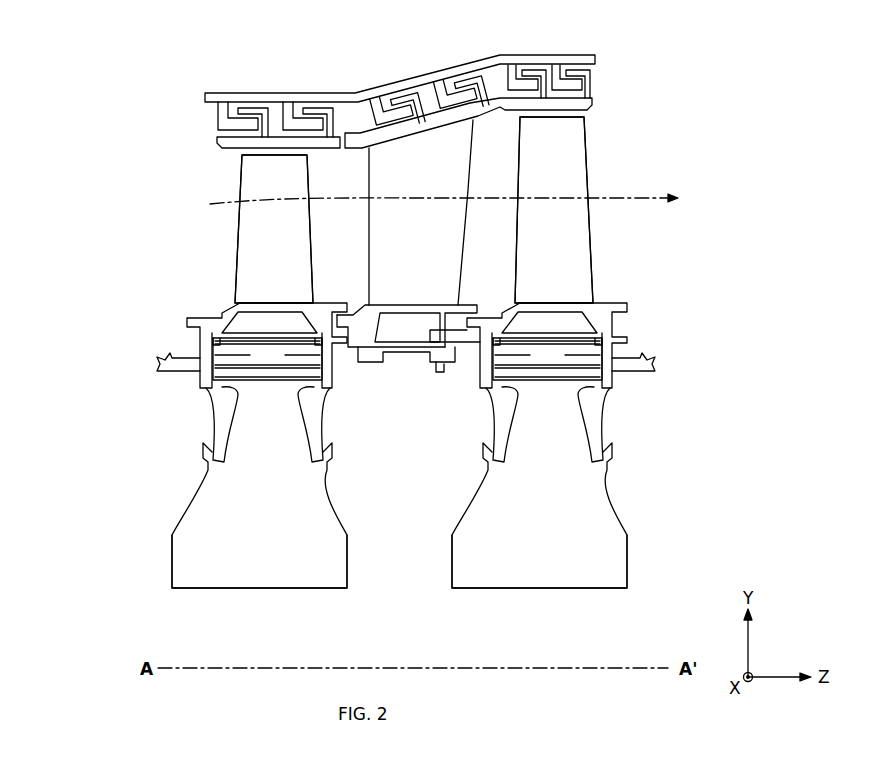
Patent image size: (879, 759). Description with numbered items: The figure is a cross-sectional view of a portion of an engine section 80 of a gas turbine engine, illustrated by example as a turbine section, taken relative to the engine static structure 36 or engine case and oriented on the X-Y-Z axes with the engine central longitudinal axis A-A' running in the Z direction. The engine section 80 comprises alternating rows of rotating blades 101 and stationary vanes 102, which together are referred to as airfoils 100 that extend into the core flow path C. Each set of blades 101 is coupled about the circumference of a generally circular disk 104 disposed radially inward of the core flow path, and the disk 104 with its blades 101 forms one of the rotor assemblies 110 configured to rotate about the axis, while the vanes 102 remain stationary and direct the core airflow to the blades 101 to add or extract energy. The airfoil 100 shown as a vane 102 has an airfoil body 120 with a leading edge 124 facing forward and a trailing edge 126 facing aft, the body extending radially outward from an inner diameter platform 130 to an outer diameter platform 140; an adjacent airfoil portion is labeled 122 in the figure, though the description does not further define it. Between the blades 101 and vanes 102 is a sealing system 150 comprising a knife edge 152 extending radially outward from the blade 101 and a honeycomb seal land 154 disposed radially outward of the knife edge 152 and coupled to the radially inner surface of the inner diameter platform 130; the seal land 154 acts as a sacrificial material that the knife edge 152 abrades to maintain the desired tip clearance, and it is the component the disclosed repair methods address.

The engine section 80 is at (73, 86).
The engine static structure 36 is at (246, 92).
The airfoils 100 is at (221, 152).
The blades 101 is at (225, 165).
The vanes 102 is at (458, 137).
The outer diameter platform 140 is at (392, 138).
The leading edge 124 is at (370, 238).
The airfoil body 120 is at (421, 212).
The second airfoil 122 is at (554, 210).
The trailing edge 126 is at (479, 200).
The inner diameter platform 130 is at (415, 304).
The honeycomb seal land 154 is at (440, 357).
The knife edge 152 is at (438, 381).
The sealing system 150 is at (437, 398).
The disk 104 is at (399, 550).
The rotor assemblies 110 is at (358, 607).